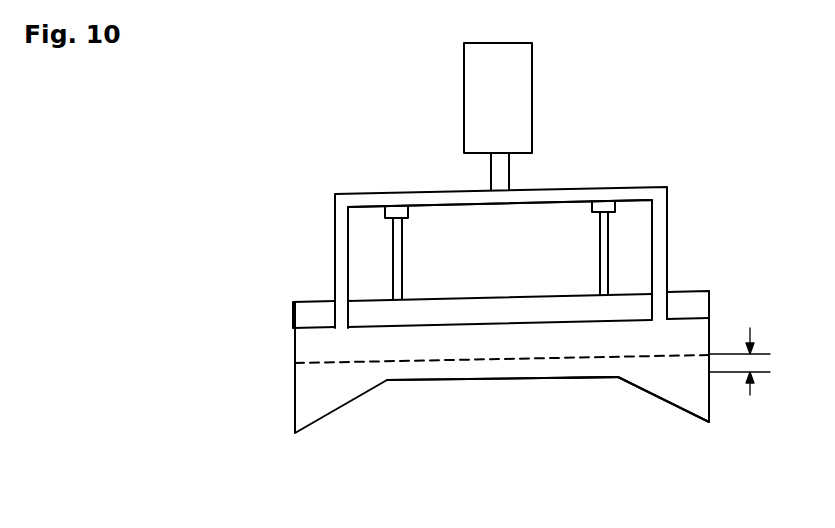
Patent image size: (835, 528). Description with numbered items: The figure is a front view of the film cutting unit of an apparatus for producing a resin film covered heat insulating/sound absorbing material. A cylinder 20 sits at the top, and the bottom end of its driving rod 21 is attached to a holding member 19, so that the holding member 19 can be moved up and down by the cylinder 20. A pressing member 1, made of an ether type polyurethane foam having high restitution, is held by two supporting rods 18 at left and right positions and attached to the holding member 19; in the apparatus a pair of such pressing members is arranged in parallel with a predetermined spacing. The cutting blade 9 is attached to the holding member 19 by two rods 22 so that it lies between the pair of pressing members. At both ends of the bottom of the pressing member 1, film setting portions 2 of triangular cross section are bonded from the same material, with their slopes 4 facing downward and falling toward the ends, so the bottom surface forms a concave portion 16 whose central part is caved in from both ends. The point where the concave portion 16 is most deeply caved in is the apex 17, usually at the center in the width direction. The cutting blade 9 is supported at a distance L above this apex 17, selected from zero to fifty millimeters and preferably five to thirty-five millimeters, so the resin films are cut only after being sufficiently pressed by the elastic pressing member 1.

The pressing member 1 is at (445, 370).
The film setting portion 2 is at (695, 403).
The slope 4 is at (668, 403).
The cutting blade 9 is at (313, 310).
The concave portion 16 is at (592, 388).
The apex 17 is at (503, 380).
The supporting rod 18 is at (659, 265).
The holding member 19 is at (452, 196).
The cylinder 20 is at (524, 72).
The driving rod 21 is at (502, 172).
The rod 22 is at (393, 245).
The distance L is at (743, 358).